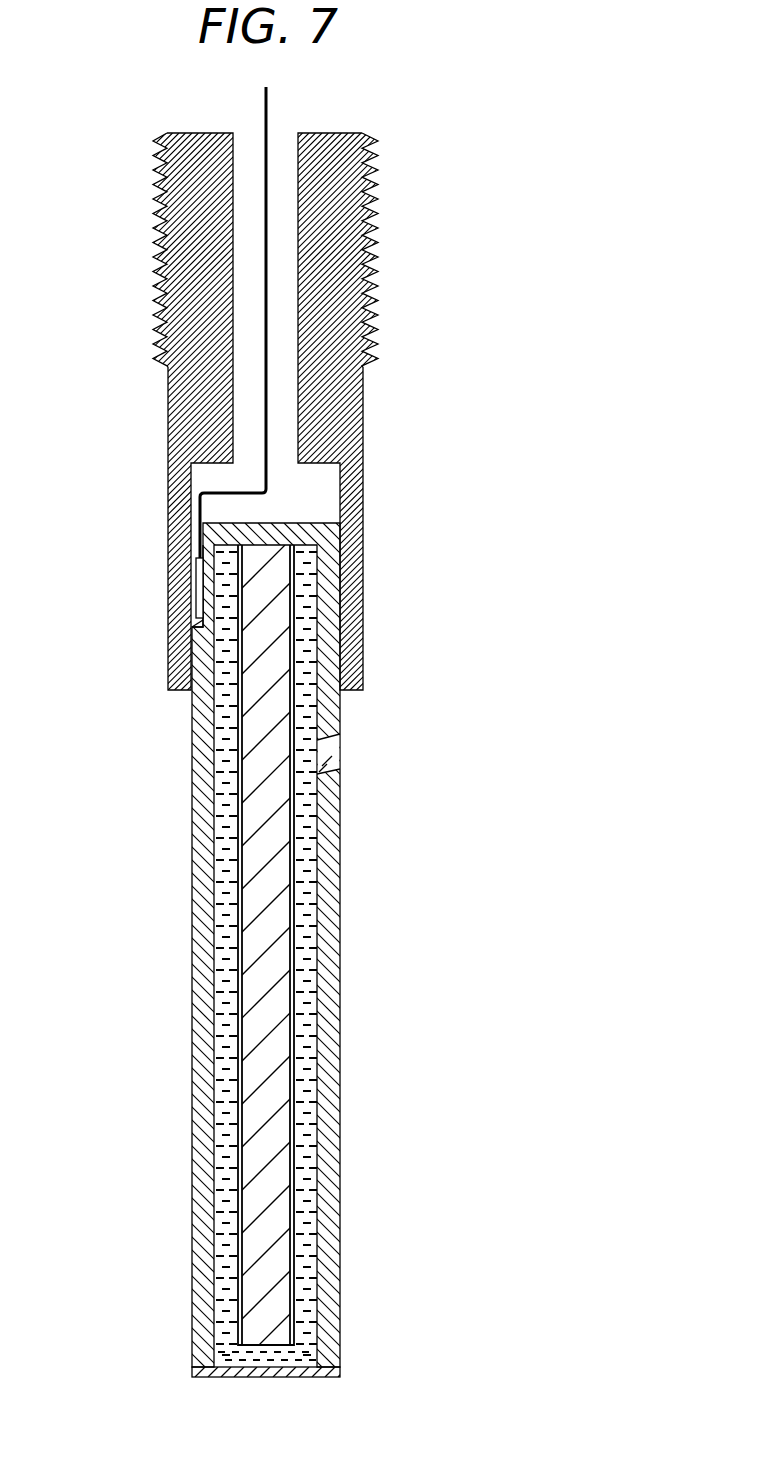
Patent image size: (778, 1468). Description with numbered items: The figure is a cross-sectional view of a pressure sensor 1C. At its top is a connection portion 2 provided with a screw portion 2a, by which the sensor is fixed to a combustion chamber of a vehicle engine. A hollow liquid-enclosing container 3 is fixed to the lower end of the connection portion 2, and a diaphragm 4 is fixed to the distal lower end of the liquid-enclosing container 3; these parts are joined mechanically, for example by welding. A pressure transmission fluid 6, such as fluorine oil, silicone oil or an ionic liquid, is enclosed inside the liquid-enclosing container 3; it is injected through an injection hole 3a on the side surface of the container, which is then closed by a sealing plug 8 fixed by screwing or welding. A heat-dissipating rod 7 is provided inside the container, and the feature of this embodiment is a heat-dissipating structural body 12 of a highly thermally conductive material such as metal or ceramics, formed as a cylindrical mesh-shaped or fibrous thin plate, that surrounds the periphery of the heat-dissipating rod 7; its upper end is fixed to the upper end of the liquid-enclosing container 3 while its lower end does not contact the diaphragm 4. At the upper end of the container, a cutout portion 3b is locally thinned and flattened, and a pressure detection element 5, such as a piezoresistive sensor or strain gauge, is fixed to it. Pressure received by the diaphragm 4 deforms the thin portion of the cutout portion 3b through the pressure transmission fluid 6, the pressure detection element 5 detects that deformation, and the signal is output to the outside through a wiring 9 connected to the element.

The pressure sensor 1C is at (389, 721).
The connection portion 2 is at (363, 409).
The screw portion 2a is at (157, 233).
The wiring 9 is at (233, 423).
The pressure detection element 5 is at (197, 583).
The liquid-enclosing container 3 is at (192, 869).
The injection hole 3a is at (337, 737).
The cutout portion 3b is at (200, 630).
The sealing plug 8 is at (337, 759).
The pressure transmission fluid 6 is at (307, 878).
The heat-dissipating rod 7 is at (272, 998).
The heat-dissipating structural body 12 is at (238, 1120).
The diaphragm 4 is at (340, 1372).